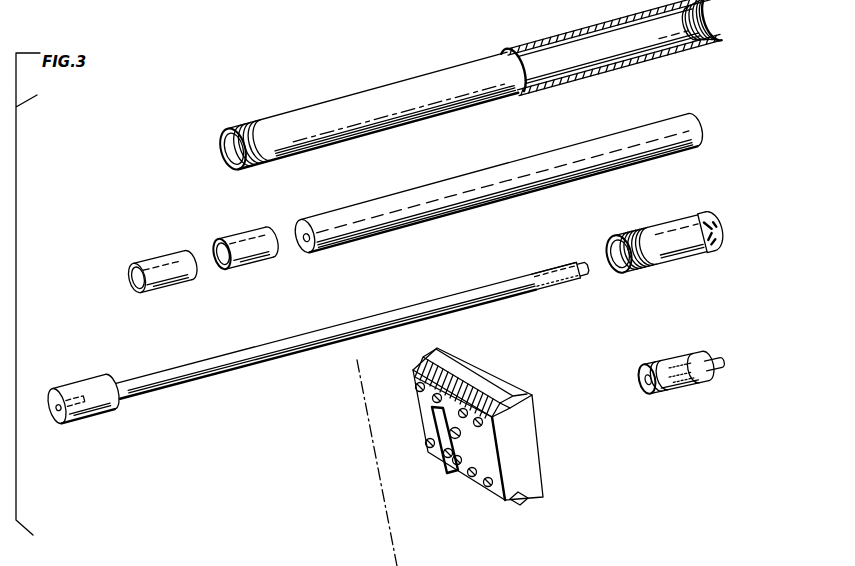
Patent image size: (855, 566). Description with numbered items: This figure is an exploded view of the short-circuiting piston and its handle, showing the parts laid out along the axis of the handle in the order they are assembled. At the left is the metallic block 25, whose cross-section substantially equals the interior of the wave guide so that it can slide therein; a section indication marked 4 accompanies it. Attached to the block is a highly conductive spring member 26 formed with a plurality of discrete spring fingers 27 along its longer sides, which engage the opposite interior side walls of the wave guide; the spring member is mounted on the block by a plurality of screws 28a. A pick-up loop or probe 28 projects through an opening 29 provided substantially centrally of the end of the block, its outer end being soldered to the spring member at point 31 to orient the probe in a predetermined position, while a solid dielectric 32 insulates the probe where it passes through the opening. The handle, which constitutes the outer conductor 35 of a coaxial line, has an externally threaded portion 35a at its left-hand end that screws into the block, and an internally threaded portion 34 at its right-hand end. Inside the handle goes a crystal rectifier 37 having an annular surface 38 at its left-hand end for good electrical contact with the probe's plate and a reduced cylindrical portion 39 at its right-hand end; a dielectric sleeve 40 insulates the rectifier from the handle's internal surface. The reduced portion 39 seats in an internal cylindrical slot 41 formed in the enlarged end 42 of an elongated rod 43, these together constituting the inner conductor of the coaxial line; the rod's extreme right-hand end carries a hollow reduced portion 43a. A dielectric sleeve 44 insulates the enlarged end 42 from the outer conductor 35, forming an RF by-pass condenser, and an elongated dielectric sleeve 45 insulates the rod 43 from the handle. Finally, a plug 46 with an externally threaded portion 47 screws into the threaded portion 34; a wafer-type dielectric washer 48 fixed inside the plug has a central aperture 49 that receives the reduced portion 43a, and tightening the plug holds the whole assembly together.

The section line 4- 4 is at (346, 381).
The metallic block 25 is at (465, 442).
The spring member 26 is at (512, 503).
The spring fingers 27 is at (418, 362).
The pick-up loop 28 is at (446, 470).
The screws 28a is at (484, 481).
The opening 29 is at (460, 437).
The soldering point 31 is at (452, 473).
The solid dielectric 32 is at (440, 447).
The internally threaded portion 34 is at (703, 26).
The outer conductor 35 is at (467, 86).
The externally threaded portion 35a is at (241, 126).
The crystal rectifier 37 is at (696, 385).
The annular surface 38 is at (650, 388).
The reduced cylindrical portion 39 is at (718, 368).
The dielectric sleeve 40 is at (163, 265).
The internal cylindrical slot 41 is at (56, 414).
The enlarged end 42 is at (74, 408).
The elongated rod 43 is at (364, 329).
The hollow reduced portion 43a is at (584, 272).
The dielectric sleeve 44 is at (247, 240).
The elongated dielectric sleeve 45 is at (545, 160).
The plug 46 is at (681, 250).
The externally threaded portion 47 is at (632, 270).
The dielectric washer 48 is at (717, 217).
The central aperture 49 is at (722, 236).